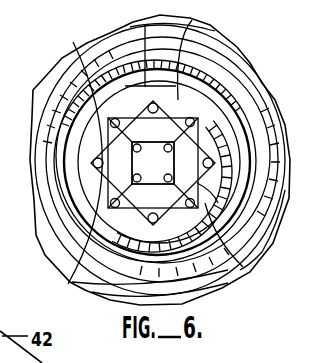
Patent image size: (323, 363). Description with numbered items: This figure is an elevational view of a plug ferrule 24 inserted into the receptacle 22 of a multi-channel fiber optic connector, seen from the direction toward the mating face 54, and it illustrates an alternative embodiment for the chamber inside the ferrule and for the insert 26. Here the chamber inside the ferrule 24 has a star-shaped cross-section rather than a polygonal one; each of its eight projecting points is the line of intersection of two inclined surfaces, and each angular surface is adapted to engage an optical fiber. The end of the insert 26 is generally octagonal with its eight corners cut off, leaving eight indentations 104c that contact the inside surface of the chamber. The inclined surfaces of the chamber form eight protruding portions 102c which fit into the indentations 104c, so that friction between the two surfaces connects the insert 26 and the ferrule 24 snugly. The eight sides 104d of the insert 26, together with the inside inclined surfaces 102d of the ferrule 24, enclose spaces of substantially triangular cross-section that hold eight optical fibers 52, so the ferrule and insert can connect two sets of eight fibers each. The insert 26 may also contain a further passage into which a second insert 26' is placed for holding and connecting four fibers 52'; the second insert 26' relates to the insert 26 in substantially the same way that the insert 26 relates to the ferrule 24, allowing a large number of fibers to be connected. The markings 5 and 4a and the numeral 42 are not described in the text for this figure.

The receptacle 22 is at (240, 41).
The plug ferrule 24 is at (233, 114).
The assembly 5 is at (184, 159).
The inside inclined surfaces 102d is at (72, 282).
The optical fibers 52 is at (91, 156).
The guide 42 is at (145, 25).
The mating face 54 is at (192, 20).
The fibers 52' is at (71, 134).
The insert 26 is at (242, 195).
The protruding portions 102c is at (242, 267).
The base portion 4a is at (6, 209).
The second insert 26' is at (153, 163).
The indentations 104c is at (179, 134).
The sides 104d is at (183, 208).